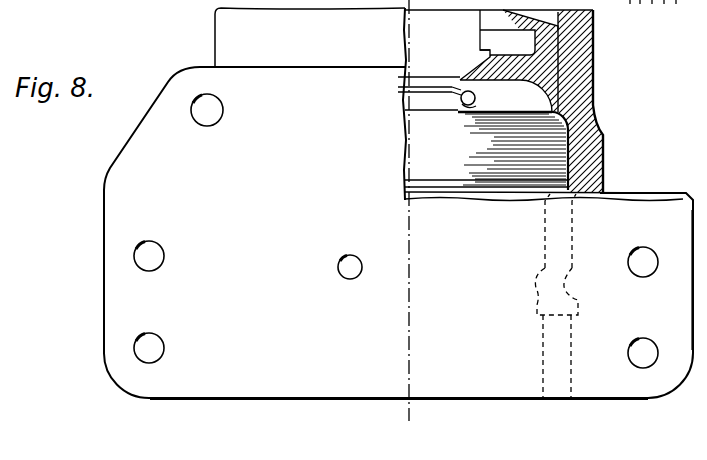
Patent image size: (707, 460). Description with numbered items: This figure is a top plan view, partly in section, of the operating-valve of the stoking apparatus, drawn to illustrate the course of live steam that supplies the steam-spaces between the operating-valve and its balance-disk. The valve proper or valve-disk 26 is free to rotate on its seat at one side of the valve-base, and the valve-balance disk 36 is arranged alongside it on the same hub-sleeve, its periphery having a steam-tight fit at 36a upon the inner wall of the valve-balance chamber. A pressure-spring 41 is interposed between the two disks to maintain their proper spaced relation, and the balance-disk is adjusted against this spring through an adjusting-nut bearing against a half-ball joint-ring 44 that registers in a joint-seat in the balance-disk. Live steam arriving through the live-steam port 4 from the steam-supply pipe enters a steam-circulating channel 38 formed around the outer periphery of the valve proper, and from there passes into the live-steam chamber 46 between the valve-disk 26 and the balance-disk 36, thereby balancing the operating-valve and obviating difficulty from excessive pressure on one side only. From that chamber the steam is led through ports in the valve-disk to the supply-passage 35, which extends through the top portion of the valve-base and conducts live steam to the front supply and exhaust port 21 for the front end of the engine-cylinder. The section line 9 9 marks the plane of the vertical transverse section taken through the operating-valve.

The live-steam port 4 is at (575, 362).
The section line 9 9 is at (407, 222).
The front supply and exhaust port 21 is at (396, 231).
The supply-passage 35 is at (338, 278).
The valve-disk 26 is at (512, 148).
The valve-balance disk 36 is at (540, 75).
The steam-tight fit 36a is at (565, 44).
The steam-circulating channel 38 is at (573, 133).
The pressure-spring 41 is at (466, 113).
The half-ball joint-ring 44 is at (462, 45).
The live-steam chamber 46 is at (520, 97).